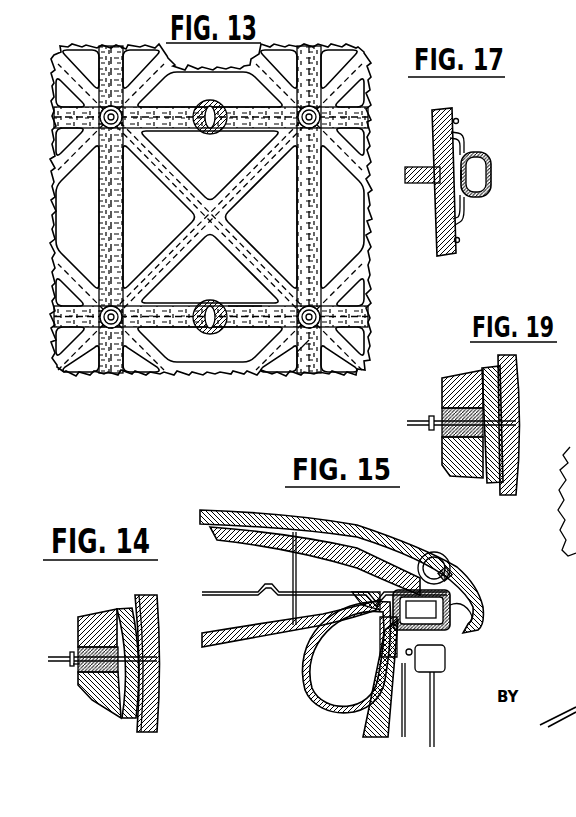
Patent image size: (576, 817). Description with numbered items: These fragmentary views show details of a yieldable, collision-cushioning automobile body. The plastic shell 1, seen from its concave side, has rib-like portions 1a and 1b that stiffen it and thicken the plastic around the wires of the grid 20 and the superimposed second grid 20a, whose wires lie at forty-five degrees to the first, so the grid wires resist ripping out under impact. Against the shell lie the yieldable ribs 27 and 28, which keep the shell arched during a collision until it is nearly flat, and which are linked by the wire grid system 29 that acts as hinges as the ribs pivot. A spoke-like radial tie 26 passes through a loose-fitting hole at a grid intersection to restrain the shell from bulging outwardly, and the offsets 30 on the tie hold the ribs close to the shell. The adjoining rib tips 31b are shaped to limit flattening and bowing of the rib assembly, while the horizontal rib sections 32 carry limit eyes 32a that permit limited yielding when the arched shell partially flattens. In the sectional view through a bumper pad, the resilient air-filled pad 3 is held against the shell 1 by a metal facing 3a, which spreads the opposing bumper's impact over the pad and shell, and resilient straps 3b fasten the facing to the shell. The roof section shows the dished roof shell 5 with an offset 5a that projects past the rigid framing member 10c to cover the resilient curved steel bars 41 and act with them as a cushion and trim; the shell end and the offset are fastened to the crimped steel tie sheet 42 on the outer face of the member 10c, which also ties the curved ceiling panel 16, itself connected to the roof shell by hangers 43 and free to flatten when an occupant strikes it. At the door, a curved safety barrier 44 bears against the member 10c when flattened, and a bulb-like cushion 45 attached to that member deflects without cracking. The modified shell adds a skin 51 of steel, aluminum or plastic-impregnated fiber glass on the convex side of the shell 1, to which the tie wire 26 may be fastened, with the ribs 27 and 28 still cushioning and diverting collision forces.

In FIG. 17, the forward plastic shell section 1 is at (455, 245).
In FIG. 19, the forward plastic shell section 1 is at (512, 402).
In FIG. 14, the forward plastic shell section 1 is at (152, 616).
In FIG. 13, the rib-like portion 1a is at (295, 186).
In FIG. 13, the rib-like portion 1b is at (226, 196).
In FIG. 17, the resilient bumper pad 3 is at (463, 140).
In FIG. 17, the metal facing 3a is at (488, 192).
In FIG. 17, the resilient strap 3b is at (456, 119).
In FIG. 15, the roof shell 5 is at (243, 511).
In FIG. 15, the offset 5a is at (373, 535).
In FIG. 15, the rigid roof framing member 10c is at (470, 623).
In FIG. 15, the curved ceiling panel 16 is at (243, 640).
In FIG. 14, the wire grid 20 is at (157, 706).
In FIG. 13, the second wire grid 20a is at (165, 270).
In FIG. 19, the radial tie 26 is at (412, 421).
In FIG. 14, the radial tie 26 is at (50, 657).
In FIG. 13, the yieldable rib 27 is at (296, 352).
In FIG. 14, the yieldable rib 27 is at (92, 704).
In FIG. 13, the yieldable rib 28 is at (318, 62).
In FIG. 17, the yieldable rib 28 is at (418, 186).
In FIG. 19, the yieldable rib 28 is at (458, 380).
In FIG. 14, the yieldable rib 28 is at (82, 616).
In FIG. 13, the wire grid system 29 is at (188, 105).
In FIG. 14, the wire grid system 29 is at (104, 609).
In FIG. 13, the offset 30 is at (262, 306).
In FIG. 14, the offset 30 is at (70, 664).
In FIG. 13, the rib tip 31b is at (126, 122).
In FIG. 14, the rib tip 31b is at (90, 648).
In FIG. 13, the horizontal rib section 32 is at (232, 105).
In FIG. 13, the limit eye 32a is at (216, 130).
In FIG. 15, the resilient curved steel bar 41 is at (434, 552).
In FIG. 15, the crimped steel tie sheet 42 is at (221, 592).
In FIG. 15, the hanger or tie 43 is at (291, 558).
In FIG. 15, the curved safety barrier 44 is at (365, 728).
In FIG. 15, the bulb-like cushion 45 is at (305, 684).
In FIG. 19, the skin 51 is at (518, 386).